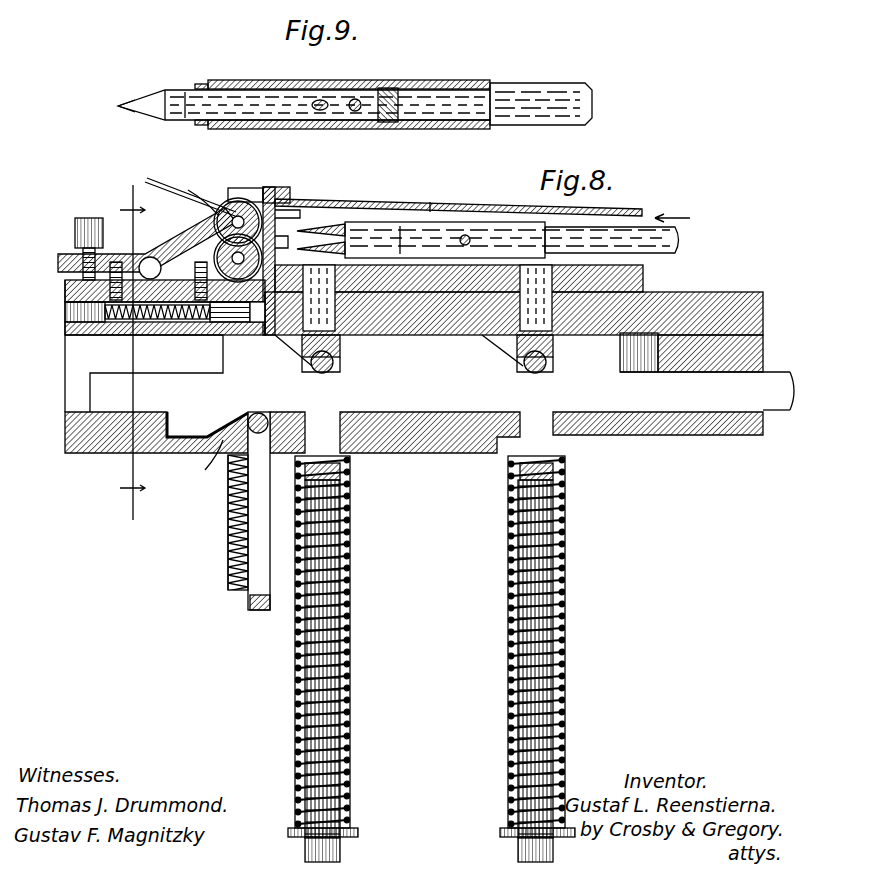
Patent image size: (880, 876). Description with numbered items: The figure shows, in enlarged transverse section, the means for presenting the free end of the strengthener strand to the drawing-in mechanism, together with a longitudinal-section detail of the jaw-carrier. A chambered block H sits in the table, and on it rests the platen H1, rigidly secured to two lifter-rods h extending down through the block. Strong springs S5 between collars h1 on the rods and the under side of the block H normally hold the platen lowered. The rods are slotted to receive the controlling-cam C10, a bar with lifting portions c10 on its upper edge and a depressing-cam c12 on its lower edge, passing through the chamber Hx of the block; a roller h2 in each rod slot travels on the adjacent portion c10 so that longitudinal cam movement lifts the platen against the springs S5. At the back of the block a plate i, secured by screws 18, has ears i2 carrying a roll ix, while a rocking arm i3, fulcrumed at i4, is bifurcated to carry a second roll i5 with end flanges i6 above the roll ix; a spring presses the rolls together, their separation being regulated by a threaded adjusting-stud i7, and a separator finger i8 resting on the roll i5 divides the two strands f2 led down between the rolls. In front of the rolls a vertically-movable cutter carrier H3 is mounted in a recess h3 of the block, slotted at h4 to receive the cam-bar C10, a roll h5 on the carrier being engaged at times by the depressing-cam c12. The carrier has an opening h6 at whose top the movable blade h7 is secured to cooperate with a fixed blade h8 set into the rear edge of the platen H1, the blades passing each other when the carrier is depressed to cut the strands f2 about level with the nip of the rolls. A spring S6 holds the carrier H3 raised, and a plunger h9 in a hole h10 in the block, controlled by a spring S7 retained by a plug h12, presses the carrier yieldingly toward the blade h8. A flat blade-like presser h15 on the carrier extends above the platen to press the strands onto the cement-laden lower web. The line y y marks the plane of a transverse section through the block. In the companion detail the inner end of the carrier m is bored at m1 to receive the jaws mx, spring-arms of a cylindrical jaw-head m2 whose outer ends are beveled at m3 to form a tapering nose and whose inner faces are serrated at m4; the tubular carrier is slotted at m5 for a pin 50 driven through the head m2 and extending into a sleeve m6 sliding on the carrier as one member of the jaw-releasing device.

In FIG. 9, the carrier m is at (560, 126).
In FIG. 8, the carrier m is at (680, 230).
In FIG. 9, the longitudinal bore m1 is at (390, 124).
In FIG. 8, the longitudinal bore m1 is at (398, 225).
In FIG. 9, the cylindrical jaw-head m2 is at (384, 82).
In FIG. 9, the beveled ends of jaws m3 is at (165, 95).
In FIG. 9, the serrated inner faces m4 is at (138, 106).
In FIG. 9, the longitudinal slots m5 is at (323, 100).
In FIG. 9, the sleeve m6 is at (474, 80).
In FIG. 8, the sleeve m6 is at (500, 230).
In FIG. 9, the nippers or jaws mx is at (184, 92).
In FIG. 8, the nippers or jaws mx is at (330, 245).
In FIG. 9, the pin 50 is at (355, 98).
In FIG. 8, the pin 50 is at (462, 236).
In FIG. 8, the chambered block H is at (763, 296).
In FIG. 8, the platen H1 is at (643, 272).
In FIG. 8, the chamber Hx is at (632, 345).
In FIG. 8, the knife or cutter carrier H3 is at (268, 187).
In FIG. 8, the controlling-cam C10 is at (625, 412).
In FIG. 8, the lifting portions c10 is at (298, 366).
In FIG. 8, the depressing-cam c12 is at (200, 470).
In FIG. 8, the lifter-rods h is at (344, 650).
In FIG. 8, the collar and slot of lifter-rod h1 is at (346, 458).
In FIG. 8, the roller or stud h2 is at (334, 360).
In FIG. 8, the recess h3 is at (272, 336).
In FIG. 8, the slot h4 is at (238, 492).
In FIG. 8, the roll h5 is at (240, 416).
In FIG. 8, the opening h6 is at (276, 230).
In FIG. 8, the movable cutter or blade h7 is at (285, 196).
In FIG. 8, the fixed blade h8 is at (276, 262).
In FIG. 8, the plunger h9 is at (220, 318).
In FIG. 8, the hole h10 is at (115, 322).
In FIG. 8, the plug h12 is at (65, 312).
In FIG. 8, the presser h15 is at (448, 204).
In FIG. 8, the springs S5 is at (348, 720).
In FIG. 8, the spring S6 is at (70, 282).
In FIG. 8, the spring S7 is at (165, 320).
In FIG. 8, the plate i is at (65, 286).
In FIG. 8, the ears i2 is at (233, 254).
In FIG. 8, the rocking arm i3 is at (192, 250).
In FIG. 8, the fulcrum i4 is at (150, 257).
In FIG. 8, the second roll i5 is at (244, 188).
In FIG. 8, the end flanges i6 is at (230, 206).
In FIG. 8, the threaded adjusting-stud i7 is at (76, 250).
In FIG. 8, the separator i8 is at (197, 191).
In FIG. 8, the roll ix is at (242, 326).
In FIG. 8, the strands of the strengthener f2 is at (145, 180).
In FIG. 8, the screws 18 is at (116, 262).
In FIG. 8, the section line y is at (126, 362).